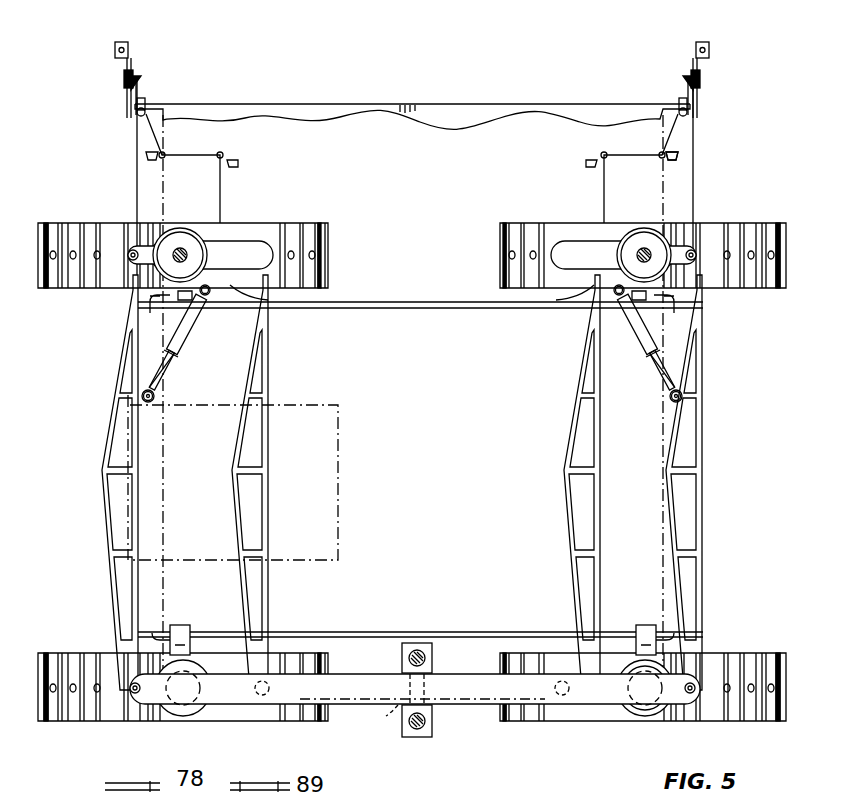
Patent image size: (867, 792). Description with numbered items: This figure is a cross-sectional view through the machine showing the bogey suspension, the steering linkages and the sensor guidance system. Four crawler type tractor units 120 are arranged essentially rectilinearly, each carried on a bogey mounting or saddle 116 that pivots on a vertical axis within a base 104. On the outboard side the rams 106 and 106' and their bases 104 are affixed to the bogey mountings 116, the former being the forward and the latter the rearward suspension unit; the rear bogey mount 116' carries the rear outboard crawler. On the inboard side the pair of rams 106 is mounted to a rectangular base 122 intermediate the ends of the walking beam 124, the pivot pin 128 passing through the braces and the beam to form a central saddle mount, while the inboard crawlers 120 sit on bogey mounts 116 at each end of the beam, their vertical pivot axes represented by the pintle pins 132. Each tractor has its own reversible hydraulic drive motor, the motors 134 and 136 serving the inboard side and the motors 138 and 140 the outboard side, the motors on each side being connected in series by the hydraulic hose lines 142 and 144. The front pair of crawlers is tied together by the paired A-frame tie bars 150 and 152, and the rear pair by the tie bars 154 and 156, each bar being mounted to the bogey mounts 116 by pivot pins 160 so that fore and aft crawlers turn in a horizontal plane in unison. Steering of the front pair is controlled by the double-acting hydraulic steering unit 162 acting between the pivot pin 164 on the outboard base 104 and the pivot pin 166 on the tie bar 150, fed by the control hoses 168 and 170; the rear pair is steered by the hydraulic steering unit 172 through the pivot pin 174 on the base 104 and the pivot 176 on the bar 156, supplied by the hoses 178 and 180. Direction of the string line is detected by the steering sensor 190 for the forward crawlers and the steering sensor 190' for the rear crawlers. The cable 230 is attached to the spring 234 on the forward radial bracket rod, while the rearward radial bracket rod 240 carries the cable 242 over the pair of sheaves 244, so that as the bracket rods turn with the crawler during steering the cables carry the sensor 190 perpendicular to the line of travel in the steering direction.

The base 104 is at (160, 238).
The ram 106 is at (412, 477).
The ram 106' is at (623, 180).
The bogey mounting 116 is at (422, 467).
The bogey mounting 116' is at (663, 710).
The crawler type tractor unit 120 is at (300, 232).
The rectangular base 122 is at (402, 730).
The walking beam 124 is at (352, 677).
The pivot pin 128 is at (386, 716).
The pintle pin 132 is at (195, 715).
The hydraulic drive motor 134 is at (650, 624).
The hydraulic drive motor 136 is at (180, 624).
The hydraulic drive motor 138 is at (672, 302).
The hydraulic drive motor 140 is at (152, 300).
The hydraulic hose line 142 is at (288, 630).
The hydraulic hose line 144 is at (465, 306).
The tie bar 150 is at (112, 418).
The tie bar 152 is at (268, 385).
The tie bar 154 is at (565, 447).
The tie bar 156 is at (705, 432).
The pivot pin 160 is at (130, 250).
The hydraulic steering unit 162 is at (190, 338).
The pivot pin 164 is at (255, 300).
The pivot pin 166 is at (150, 403).
The hydraulic control hose 168 is at (175, 360).
The hydraulic control hose 170 is at (205, 305).
The hydraulic steering unit 172 is at (660, 325).
The pivot pin 174 is at (600, 297).
The pivot 176 is at (668, 397).
The hydraulic control hose 178 is at (650, 355).
The hydraulic control hose 180 is at (640, 318).
The steering sensor 190 is at (108, 71).
The steering sensor 190' is at (725, 67).
The cable 230 is at (700, 158).
The spring 234 is at (138, 225).
The rearward radial bracket rod 240 is at (222, 240).
The cable 242 is at (196, 156).
The sheave 244 is at (238, 164).